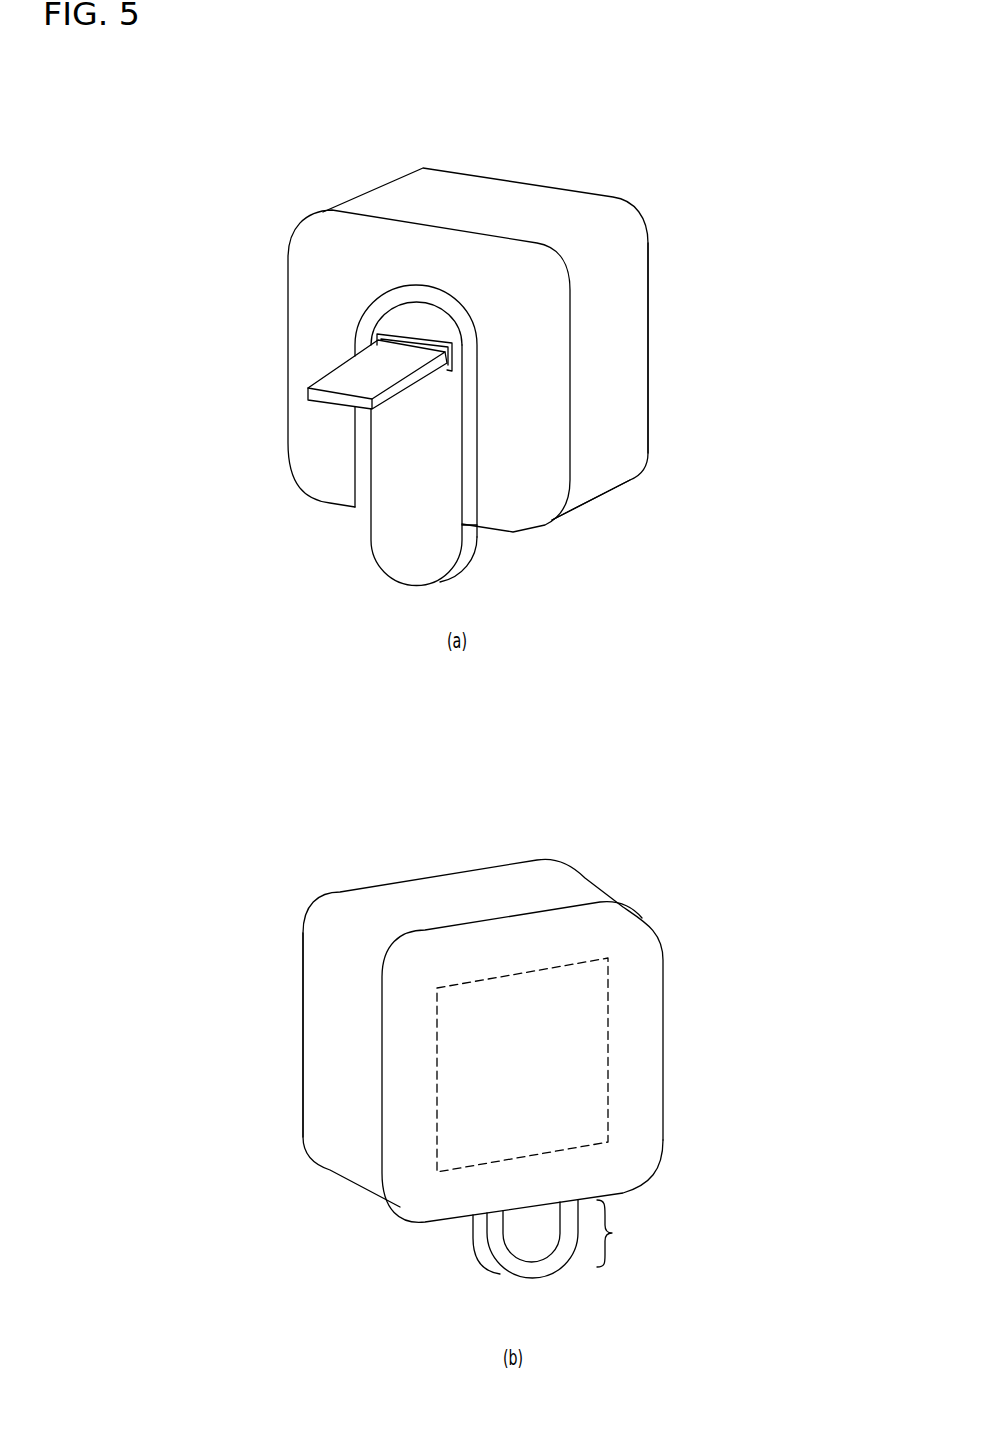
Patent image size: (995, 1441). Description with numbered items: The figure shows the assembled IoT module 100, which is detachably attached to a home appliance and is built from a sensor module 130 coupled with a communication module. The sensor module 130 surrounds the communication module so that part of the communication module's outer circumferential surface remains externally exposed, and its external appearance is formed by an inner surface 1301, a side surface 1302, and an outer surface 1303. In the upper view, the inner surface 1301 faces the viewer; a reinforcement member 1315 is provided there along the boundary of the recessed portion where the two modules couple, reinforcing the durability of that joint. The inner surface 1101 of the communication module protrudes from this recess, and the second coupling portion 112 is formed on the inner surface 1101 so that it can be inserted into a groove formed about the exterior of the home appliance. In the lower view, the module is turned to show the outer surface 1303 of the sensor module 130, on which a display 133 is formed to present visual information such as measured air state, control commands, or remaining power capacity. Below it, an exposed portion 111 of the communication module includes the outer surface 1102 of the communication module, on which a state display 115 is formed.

The IoT module 100 is at (633, 188).
The sensor module 130 is at (337, 205).
The inner surface 1301 is at (552, 473).
The side surface 1302 is at (608, 410).
The outer surface 1303 is at (645, 1042).
The reinforcement member 1315 is at (468, 322).
The inner surface 1101 is at (392, 562).
The second coupling portion 112 is at (337, 385).
The display 133 is at (485, 980).
The outer surface 1102 is at (515, 1239).
The state display 115 is at (540, 1268).
The portion of the communication module 111 is at (612, 1233).